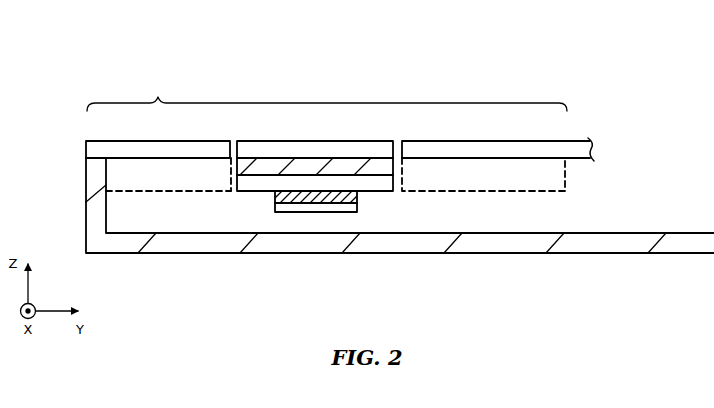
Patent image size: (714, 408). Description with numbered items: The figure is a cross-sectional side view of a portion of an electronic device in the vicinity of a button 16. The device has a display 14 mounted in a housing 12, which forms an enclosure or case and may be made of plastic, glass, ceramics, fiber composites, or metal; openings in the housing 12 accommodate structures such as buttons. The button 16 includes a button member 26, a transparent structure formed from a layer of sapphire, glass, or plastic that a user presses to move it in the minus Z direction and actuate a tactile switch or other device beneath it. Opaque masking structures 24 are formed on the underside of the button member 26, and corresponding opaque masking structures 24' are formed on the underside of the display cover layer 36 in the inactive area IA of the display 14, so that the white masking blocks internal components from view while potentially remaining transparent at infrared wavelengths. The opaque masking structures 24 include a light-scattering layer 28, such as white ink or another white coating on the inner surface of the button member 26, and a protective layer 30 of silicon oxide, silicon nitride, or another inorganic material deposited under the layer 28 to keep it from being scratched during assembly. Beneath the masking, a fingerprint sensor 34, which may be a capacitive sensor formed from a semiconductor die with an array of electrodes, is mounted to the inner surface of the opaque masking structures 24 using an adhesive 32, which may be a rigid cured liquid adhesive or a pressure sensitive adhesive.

The housing 12 is at (520, 242).
The display 14 is at (623, 92).
The button 16 is at (375, 90).
The inactive area IA is at (327, 95).
The display cover layer 36 is at (98, 146).
The button member 26 is at (268, 148).
The light-scattering layer 28 is at (305, 165).
The protective layer 30 is at (261, 194).
The adhesive 32 is at (358, 198).
The fingerprint sensor 34 is at (311, 214).
The opaque masking structures 24 is at (218, 191).
The opaque masking structures 24' is at (303, 224).